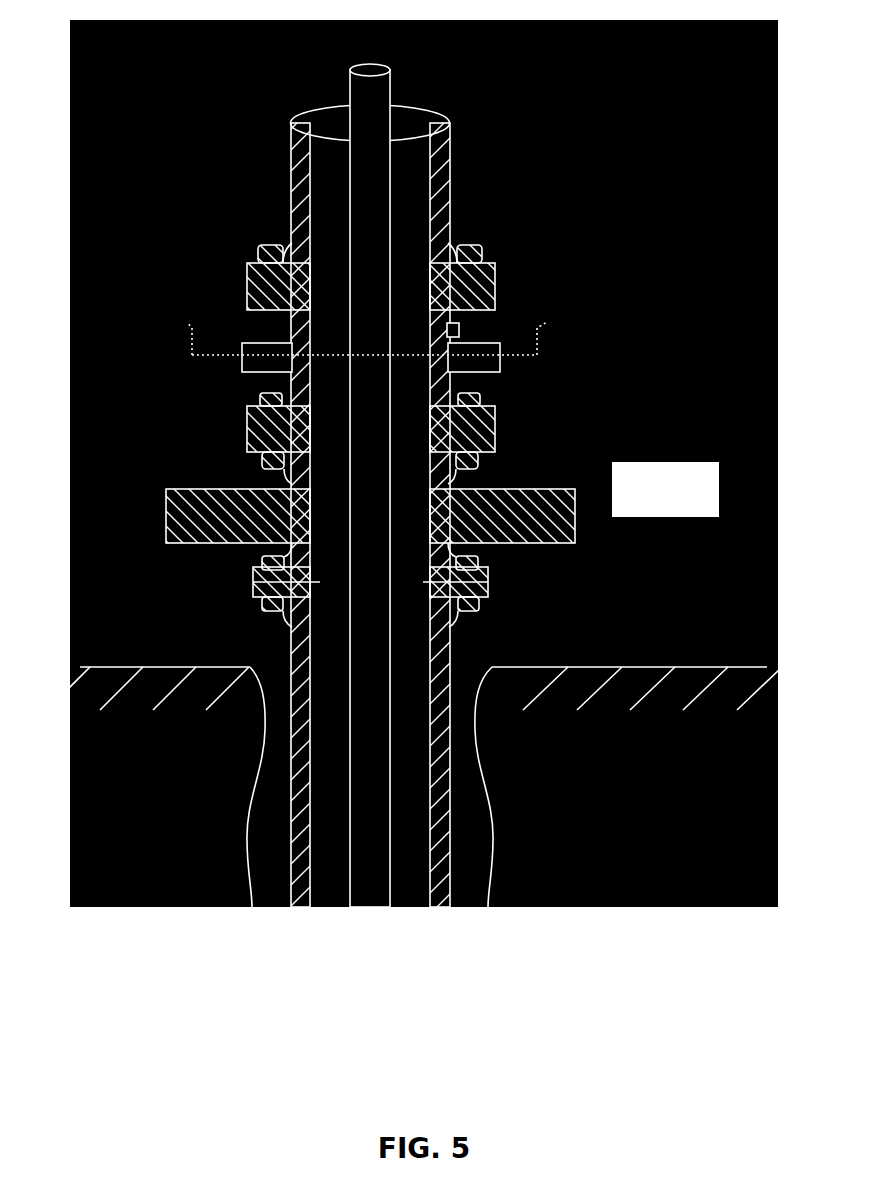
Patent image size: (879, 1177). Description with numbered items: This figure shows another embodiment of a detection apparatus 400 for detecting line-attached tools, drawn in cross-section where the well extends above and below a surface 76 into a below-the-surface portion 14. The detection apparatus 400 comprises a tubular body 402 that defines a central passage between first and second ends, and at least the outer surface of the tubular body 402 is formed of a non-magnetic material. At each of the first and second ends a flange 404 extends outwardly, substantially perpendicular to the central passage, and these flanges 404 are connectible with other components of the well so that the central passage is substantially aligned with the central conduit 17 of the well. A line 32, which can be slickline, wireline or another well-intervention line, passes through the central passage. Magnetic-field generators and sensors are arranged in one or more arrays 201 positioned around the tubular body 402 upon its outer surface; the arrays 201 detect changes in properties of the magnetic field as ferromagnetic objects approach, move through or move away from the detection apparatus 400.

The below-the-surface portion 14 is at (470, 875).
The central conduit 17 is at (440, 745).
The line 32 is at (390, 75).
The surface 76 is at (720, 670).
The array 201 is at (242, 365).
The detection apparatus 400 is at (245, 302).
The tubular body 402 is at (450, 388).
The flange 404 is at (495, 268).